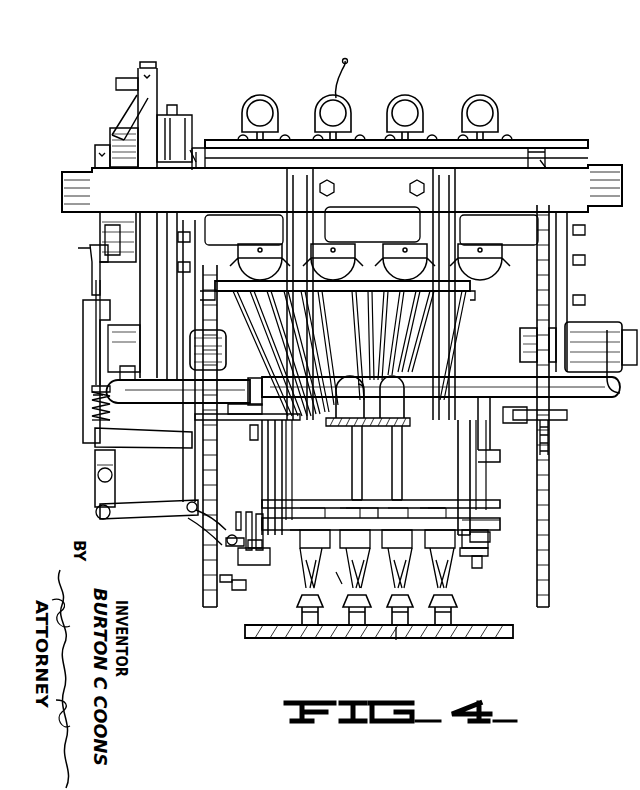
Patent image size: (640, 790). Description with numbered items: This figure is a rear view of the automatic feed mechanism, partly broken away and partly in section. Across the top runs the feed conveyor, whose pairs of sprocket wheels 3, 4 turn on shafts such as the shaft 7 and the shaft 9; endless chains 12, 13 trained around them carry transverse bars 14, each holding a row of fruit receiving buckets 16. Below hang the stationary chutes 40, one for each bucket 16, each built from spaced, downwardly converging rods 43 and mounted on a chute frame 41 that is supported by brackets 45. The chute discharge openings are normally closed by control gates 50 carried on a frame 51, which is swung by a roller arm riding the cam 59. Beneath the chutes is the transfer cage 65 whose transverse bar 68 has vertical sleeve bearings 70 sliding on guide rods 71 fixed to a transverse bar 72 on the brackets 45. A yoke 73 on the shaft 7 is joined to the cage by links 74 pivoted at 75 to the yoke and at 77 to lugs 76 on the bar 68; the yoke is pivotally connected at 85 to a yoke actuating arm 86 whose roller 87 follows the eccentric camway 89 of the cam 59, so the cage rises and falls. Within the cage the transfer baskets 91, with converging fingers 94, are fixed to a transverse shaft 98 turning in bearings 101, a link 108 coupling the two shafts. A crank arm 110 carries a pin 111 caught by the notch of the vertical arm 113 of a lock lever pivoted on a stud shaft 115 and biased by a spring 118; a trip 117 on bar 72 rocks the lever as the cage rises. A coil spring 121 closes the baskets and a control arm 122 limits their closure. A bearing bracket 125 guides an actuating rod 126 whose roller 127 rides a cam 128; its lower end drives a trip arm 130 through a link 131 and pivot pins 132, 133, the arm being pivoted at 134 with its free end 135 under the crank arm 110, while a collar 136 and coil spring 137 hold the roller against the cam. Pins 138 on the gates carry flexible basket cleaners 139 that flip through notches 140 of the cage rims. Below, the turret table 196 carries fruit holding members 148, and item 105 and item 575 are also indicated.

The sprocket wheels 3 is at (265, 381).
The sprocket wheels 4 is at (193, 160).
The shaft 7 is at (248, 352).
The shaft 9 is at (338, 578).
The endless chain 12 is at (205, 595).
The endless chain 13 is at (549, 470).
The transverse bars 14 is at (418, 148).
The fruit receiving buckets 16 is at (278, 112).
The stationary chutes 40 is at (326, 282).
The chute frame 41 is at (463, 395).
The converging wires or rods 43 is at (283, 348).
The brackets 45 is at (562, 248).
The control gates 50 is at (368, 401).
The frame 51 is at (450, 230).
The cam 59 is at (120, 220).
The transfer cage 65 is at (470, 526).
The transverse bar 68 is at (487, 545).
The vertical sleeve bearings 70 is at (482, 566).
The guide rods 71 is at (284, 458).
The transverse bar 72 is at (490, 428).
The yoke 73 is at (592, 398).
The links 74 is at (280, 486).
The pivot 75 is at (550, 440).
The lugs 76 is at (290, 510).
The pivot 77 is at (304, 524).
The pivotal connection 85 is at (122, 380).
The yoke actuating arm 86 is at (150, 298).
The roller 87 is at (98, 168).
The camway 89 is at (116, 130).
The transfer baskets 91 is at (306, 586).
The converging fingers or rods 94 is at (352, 583).
The transverse shaft 98 is at (389, 568).
The bearings 101 is at (352, 514).
The valve 105 is at (304, 523).
The link 108 is at (244, 588).
The crank arm 110 is at (246, 516).
The pin 111 is at (229, 515).
The vertical arm 113 is at (260, 516).
The stud shaft 115 is at (232, 546).
The trip 117 is at (252, 432).
The spring 118 is at (210, 583).
The coil spring 121 is at (490, 536).
The control arm 122 is at (258, 556).
The bearing bracket 125 is at (88, 372).
The actuating rod 126 is at (96, 334).
The roller 127 is at (92, 258).
The cam 128 is at (104, 230).
The trip arm 130 is at (148, 521).
The link 131 is at (114, 492).
The pivot pin 132 is at (98, 486).
The pivot pin 133 is at (96, 514).
The pivot 134 is at (192, 516).
The free end 135 is at (230, 542).
The collar 136 is at (94, 390).
The coil spring 137 is at (94, 402).
The pins 138 is at (353, 436).
The flexible basket cleaners 139 is at (394, 470).
The notches 140 is at (430, 524).
The fruit holding members 148 is at (380, 636).
The table 196 is at (462, 636).
The bottle 575 is at (412, 640).